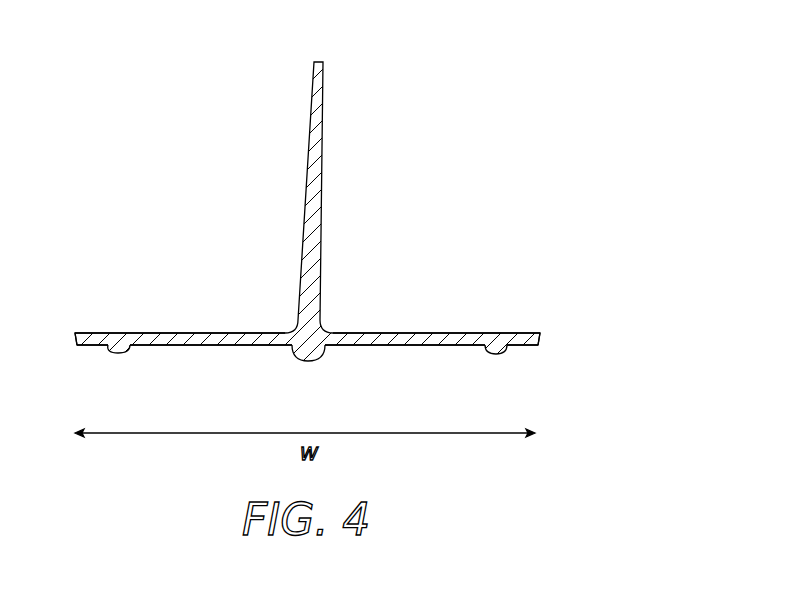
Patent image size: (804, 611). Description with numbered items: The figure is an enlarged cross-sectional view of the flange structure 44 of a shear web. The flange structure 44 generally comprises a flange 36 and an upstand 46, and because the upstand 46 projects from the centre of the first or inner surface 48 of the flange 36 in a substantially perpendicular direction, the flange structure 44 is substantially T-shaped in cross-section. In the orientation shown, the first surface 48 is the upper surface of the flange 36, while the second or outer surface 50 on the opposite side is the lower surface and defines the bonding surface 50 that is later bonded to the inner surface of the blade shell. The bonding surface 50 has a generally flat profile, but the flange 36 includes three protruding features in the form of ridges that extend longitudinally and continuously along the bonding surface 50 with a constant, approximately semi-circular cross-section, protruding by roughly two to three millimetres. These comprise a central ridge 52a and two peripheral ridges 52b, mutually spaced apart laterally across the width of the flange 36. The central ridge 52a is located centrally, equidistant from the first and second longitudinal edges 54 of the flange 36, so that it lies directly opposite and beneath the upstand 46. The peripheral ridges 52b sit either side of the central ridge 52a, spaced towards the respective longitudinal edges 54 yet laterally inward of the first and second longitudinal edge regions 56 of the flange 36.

The flange structure 44 is at (437, 118).
The upstand 46 is at (318, 232).
The flange 36 is at (185, 333).
The first or inner surface 48 is at (252, 332).
The second or outer surface (bonding surface) 50 is at (405, 345).
The central ridge 52a is at (312, 362).
The peripheral ridges 52b is at (118, 355).
The longitudinal edges 54 is at (75, 340).
The longitudinal edge regions 56 is at (110, 328).